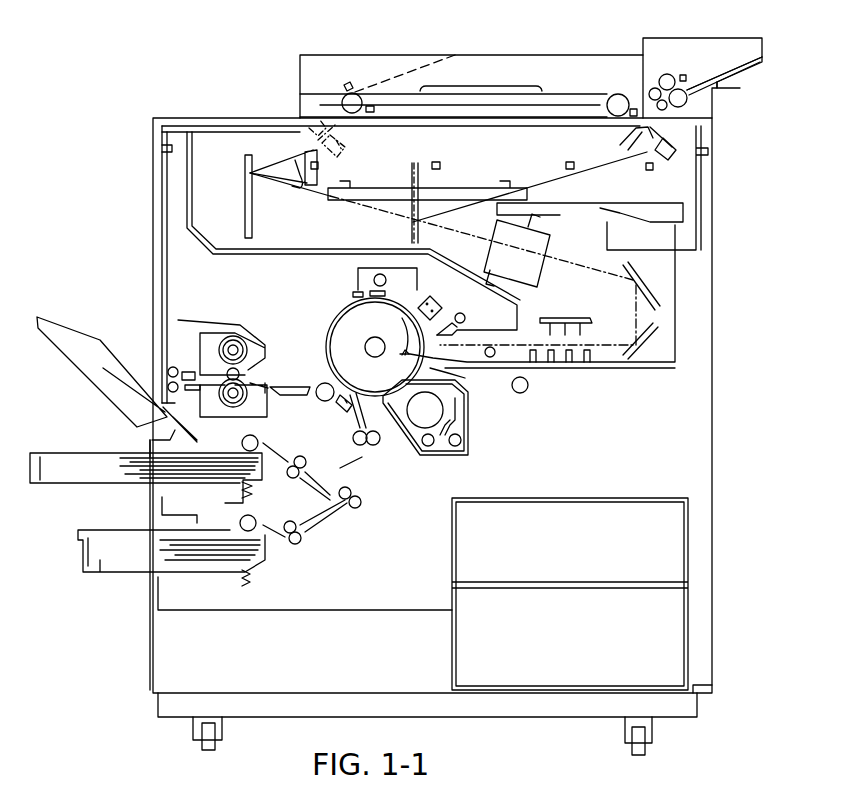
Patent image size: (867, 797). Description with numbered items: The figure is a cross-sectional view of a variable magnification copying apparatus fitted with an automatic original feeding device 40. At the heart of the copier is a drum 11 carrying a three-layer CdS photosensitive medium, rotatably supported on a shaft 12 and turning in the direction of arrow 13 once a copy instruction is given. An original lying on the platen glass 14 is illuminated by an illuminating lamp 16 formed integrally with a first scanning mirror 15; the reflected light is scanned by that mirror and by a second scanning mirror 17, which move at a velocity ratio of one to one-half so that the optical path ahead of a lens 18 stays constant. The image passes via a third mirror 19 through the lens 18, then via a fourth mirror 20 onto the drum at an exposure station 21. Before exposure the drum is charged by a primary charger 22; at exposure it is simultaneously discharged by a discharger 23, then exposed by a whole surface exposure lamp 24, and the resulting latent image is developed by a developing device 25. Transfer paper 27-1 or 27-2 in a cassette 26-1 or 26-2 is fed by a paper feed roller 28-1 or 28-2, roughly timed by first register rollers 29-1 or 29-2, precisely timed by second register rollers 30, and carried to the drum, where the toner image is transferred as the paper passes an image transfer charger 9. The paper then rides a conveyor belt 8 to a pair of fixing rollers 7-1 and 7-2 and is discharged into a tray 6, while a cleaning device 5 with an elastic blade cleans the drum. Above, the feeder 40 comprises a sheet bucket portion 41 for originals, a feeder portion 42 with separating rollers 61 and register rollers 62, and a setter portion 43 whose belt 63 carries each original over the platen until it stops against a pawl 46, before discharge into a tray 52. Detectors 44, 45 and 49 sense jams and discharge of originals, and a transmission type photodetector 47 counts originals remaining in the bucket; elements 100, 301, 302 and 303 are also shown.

The cleaning device 5 is at (356, 274).
The tray 6 is at (75, 332).
The fixing roller 7-1 is at (240, 333).
The fixing roller 7-2 is at (242, 415).
The conveyor belt 8 is at (288, 386).
The image transfer charger 9 is at (348, 414).
The drum 11 is at (340, 312).
The shaft 12 is at (365, 347).
The arrow 13 is at (404, 325).
The platen glass 14 is at (425, 126).
The first scanning mirror 15 is at (298, 186).
The illuminating lamp 16 is at (337, 145).
The second scanning mirror 17 is at (253, 237).
The lens 18 is at (542, 262).
The third mirror 19 is at (642, 296).
The fourth mirror 20 is at (638, 352).
The exposure station 21 is at (462, 378).
The primary charger 22 is at (442, 306).
The discharger 23 is at (465, 318).
The whole surface exposure lamp 24 is at (528, 390).
The developing device 25 is at (437, 458).
The cassette 26-1 is at (45, 486).
The cassette 26-2 is at (100, 576).
The transfer paper 27-1 is at (110, 456).
The transfer paper 27-2 is at (120, 535).
The paper feed roller 28-1 is at (258, 440).
The paper feed roller 28-2 is at (258, 517).
The first register rollers 29-1 is at (305, 462).
The first register rollers 29-2 is at (301, 544).
The second register rollers 30 is at (378, 446).
The automatic original feeding device 40 is at (578, 55).
The sheet bucket portion 41 is at (740, 78).
The feeder portion 42 is at (697, 32).
The setter portion 43 is at (453, 92).
The detector 44 is at (634, 108).
The detector 45 is at (371, 104).
The pawl 46 is at (340, 108).
The transmission type photodetector 47 is at (690, 72).
The detector 49 is at (348, 82).
The tray 52 is at (455, 55).
The separating rollers 61 is at (684, 73).
The register rollers 62 is at (655, 82).
The belt 63 is at (574, 96).
The sensor 100 is at (565, 164).
The sensor 301 is at (654, 168).
The sensor 302 is at (440, 162).
The sensor 303 is at (320, 170).